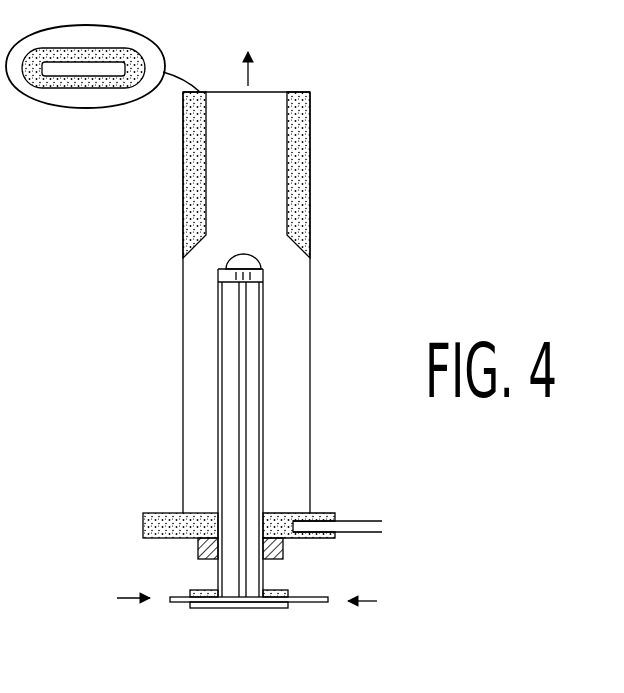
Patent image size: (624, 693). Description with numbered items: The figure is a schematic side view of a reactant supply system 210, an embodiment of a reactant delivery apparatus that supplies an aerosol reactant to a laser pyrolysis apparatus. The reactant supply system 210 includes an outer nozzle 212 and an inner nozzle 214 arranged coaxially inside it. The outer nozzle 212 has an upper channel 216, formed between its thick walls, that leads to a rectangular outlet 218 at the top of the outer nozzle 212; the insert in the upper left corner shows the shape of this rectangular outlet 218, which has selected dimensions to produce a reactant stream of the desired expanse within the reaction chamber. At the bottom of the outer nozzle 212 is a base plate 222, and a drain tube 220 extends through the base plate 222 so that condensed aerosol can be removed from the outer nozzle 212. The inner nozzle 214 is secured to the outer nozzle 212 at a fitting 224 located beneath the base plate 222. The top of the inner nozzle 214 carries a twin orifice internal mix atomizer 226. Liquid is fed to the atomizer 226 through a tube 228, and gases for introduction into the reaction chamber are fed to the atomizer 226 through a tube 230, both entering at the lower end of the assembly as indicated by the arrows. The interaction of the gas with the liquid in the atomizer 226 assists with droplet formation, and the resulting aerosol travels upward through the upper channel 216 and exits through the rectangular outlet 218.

The reactant supply system 210 is at (130, 302).
The outer nozzle 212 is at (183, 360).
The inner nozzle 214 is at (264, 400).
The upper channel 216 is at (220, 156).
The rectangular outlet 218 is at (278, 92).
The drain tube 220 is at (345, 520).
The base plate 222 is at (143, 520).
The fitting 224 is at (283, 548).
The twin orifice internal mix atomizer 226 is at (238, 260).
The tube 228 is at (308, 603).
The tube 230 is at (177, 602).